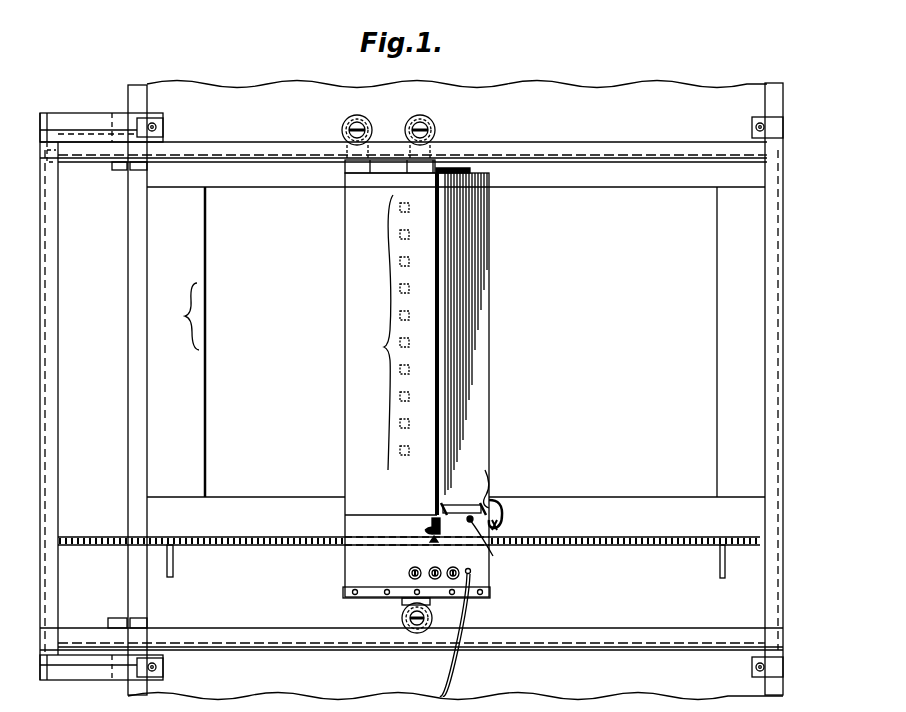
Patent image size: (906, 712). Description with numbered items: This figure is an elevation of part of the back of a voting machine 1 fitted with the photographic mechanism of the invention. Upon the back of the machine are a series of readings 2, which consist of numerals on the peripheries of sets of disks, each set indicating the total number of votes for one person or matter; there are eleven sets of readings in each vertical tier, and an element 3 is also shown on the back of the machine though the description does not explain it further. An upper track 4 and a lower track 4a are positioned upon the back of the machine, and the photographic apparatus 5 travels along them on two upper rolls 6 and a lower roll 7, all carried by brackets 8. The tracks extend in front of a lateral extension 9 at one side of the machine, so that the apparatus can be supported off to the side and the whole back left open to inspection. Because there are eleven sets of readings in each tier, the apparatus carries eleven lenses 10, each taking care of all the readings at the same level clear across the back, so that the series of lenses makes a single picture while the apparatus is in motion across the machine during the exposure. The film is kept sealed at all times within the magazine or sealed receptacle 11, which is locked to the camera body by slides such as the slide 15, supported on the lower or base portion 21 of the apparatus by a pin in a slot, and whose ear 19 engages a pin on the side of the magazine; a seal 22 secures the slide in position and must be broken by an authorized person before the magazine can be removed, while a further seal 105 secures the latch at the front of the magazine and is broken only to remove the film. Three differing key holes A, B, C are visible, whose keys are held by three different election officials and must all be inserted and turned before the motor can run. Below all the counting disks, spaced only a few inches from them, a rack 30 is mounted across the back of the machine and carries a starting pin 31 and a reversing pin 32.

The back of the voting machine 1 is at (560, 94).
The readings 2 is at (182, 316).
The cross bar 3 is at (205, 225).
The upper track 4 is at (232, 153).
The lower track 4a is at (240, 632).
The photographic apparatus 5 is at (355, 502).
The upper rolls 6 is at (346, 120).
The lower roll 7 is at (432, 620).
The brackets 8 is at (352, 167).
The lateral extension 9 is at (411, 389).
The lenses 10 is at (382, 332).
The magazine or sealed receptacle 11 is at (490, 183).
The slide 15 is at (478, 608).
The ear 19 is at (441, 507).
The base portion 21 is at (353, 565).
The seal 22 is at (430, 530).
The rack 30 is at (272, 546).
The starting pin 31 is at (173, 561).
The reversing pin 32 is at (720, 569).
The seal 105 is at (503, 512).
The key hole A is at (453, 564).
The key hole B is at (435, 564).
The key hole C is at (415, 564).